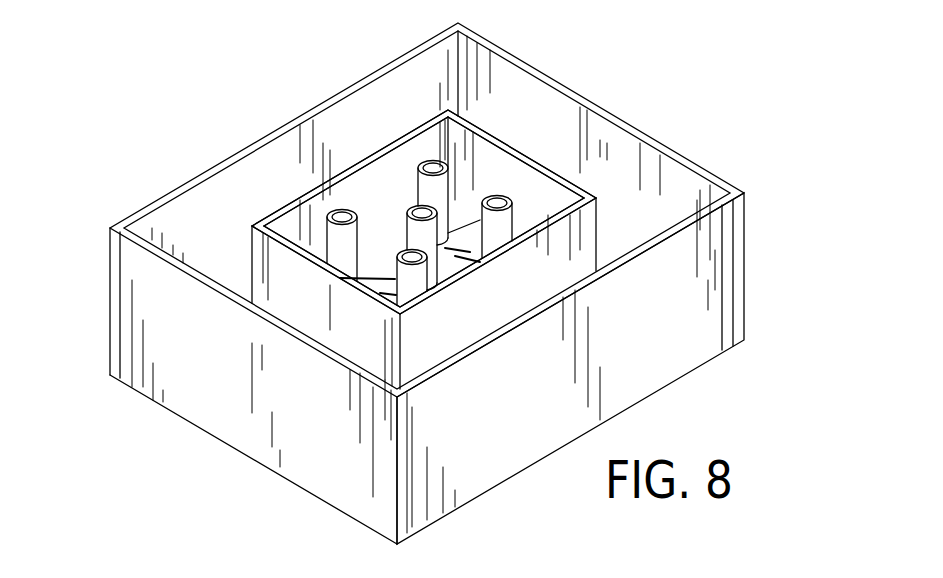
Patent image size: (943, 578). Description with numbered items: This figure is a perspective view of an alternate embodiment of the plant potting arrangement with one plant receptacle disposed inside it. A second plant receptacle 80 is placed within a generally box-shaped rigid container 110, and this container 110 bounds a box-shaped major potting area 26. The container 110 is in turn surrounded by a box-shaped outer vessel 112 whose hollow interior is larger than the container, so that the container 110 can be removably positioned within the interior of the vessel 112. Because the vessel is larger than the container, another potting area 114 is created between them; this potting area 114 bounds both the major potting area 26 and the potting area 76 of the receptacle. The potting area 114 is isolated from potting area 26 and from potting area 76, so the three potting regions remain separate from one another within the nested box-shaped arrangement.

The major potting area 26 is at (447, 208).
The potting area 76 is at (433, 165).
The second plant receptacle 80 is at (500, 200).
The rigid container 110 is at (572, 185).
The outer vessel 112 is at (710, 295).
The potting area 114 is at (235, 215).